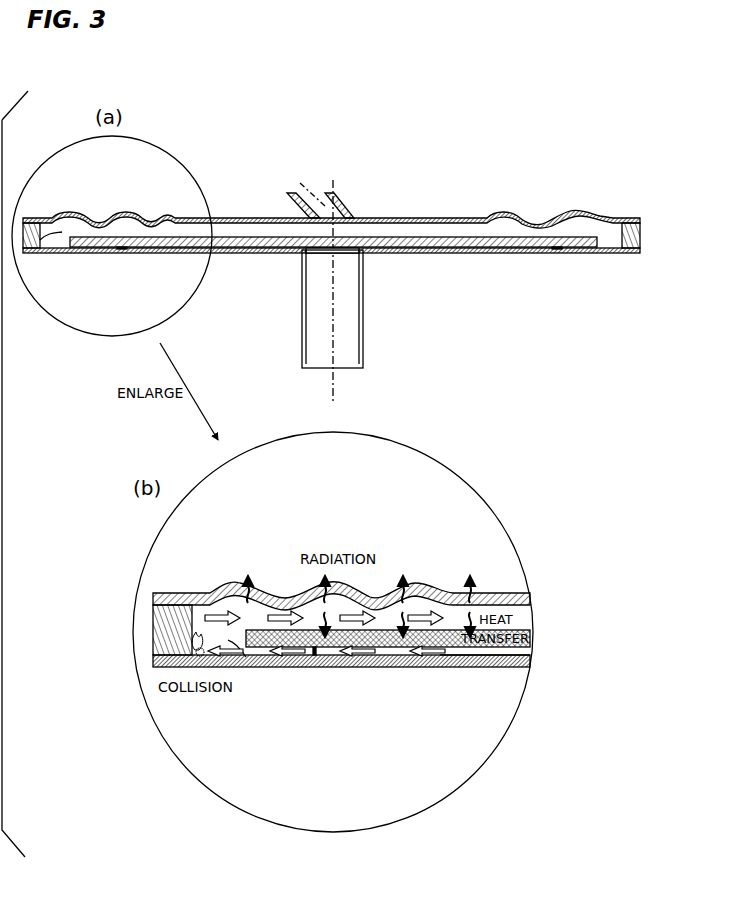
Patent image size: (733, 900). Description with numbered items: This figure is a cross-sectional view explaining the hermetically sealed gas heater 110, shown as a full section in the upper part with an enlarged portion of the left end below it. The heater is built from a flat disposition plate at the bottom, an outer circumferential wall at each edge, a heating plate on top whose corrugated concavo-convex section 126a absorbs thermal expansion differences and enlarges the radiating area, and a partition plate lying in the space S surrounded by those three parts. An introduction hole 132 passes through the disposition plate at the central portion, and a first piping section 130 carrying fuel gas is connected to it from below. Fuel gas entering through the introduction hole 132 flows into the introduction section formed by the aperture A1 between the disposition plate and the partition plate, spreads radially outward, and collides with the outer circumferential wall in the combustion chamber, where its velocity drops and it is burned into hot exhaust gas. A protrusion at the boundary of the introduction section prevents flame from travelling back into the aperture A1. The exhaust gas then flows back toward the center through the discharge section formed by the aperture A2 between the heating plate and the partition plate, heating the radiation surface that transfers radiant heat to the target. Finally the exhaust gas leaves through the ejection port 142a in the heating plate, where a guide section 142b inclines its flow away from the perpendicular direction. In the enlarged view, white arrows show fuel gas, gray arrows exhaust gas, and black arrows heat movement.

The hermetically sealed gas heater 110 is at (576, 170).
The concavo-convex section 126a is at (522, 216).
The first piping section 130 is at (362, 356).
The introduction hole 132 is at (318, 253).
The ejection port 142a is at (292, 196).
The guide section 142b is at (342, 196).
The space S is at (60, 243).
The aperture A1 is at (140, 254).
The aperture A2 is at (112, 228).